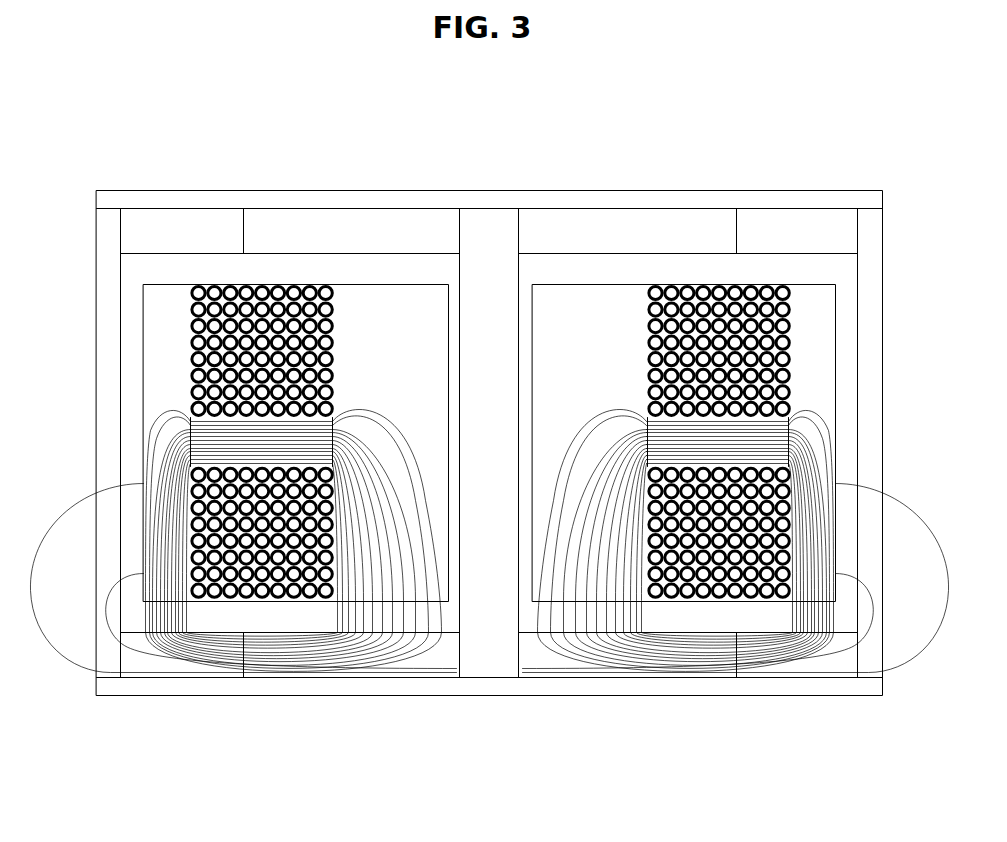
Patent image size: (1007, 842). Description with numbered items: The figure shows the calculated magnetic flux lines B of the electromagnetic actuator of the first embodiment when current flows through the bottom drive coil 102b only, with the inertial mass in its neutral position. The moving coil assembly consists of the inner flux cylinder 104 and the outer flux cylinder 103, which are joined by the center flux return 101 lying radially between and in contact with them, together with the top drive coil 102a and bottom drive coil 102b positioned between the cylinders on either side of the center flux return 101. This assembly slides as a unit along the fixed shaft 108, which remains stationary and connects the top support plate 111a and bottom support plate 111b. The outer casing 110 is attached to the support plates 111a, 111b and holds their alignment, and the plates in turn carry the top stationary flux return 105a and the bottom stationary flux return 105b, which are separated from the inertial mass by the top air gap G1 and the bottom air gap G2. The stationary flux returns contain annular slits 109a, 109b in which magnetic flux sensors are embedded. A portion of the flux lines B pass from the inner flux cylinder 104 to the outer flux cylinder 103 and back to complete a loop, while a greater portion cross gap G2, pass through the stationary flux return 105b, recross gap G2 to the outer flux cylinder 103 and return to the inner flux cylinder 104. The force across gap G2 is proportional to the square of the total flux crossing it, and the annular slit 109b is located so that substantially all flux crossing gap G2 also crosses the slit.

The center flux return 101 is at (298, 435).
The top drive coil 102a is at (684, 280).
The bottom drive coil 102b is at (682, 580).
The outer flux cylinder 103 is at (178, 294).
The inner flux cylinder 104 is at (606, 313).
The top stationary flux return 105a is at (433, 222).
The bottom stationary flux return 105b is at (428, 655).
The shaft 108 is at (505, 663).
The annular slit 109a is at (243, 215).
The annular slit 109b is at (243, 633).
The outer casing 110 is at (112, 220).
The top support plate 111a is at (536, 197).
The bottom support plate 111b is at (558, 683).
The magnetic flux lines B is at (80, 682).
The top air gap G1 is at (766, 256).
The bottom air gap G2 is at (763, 627).